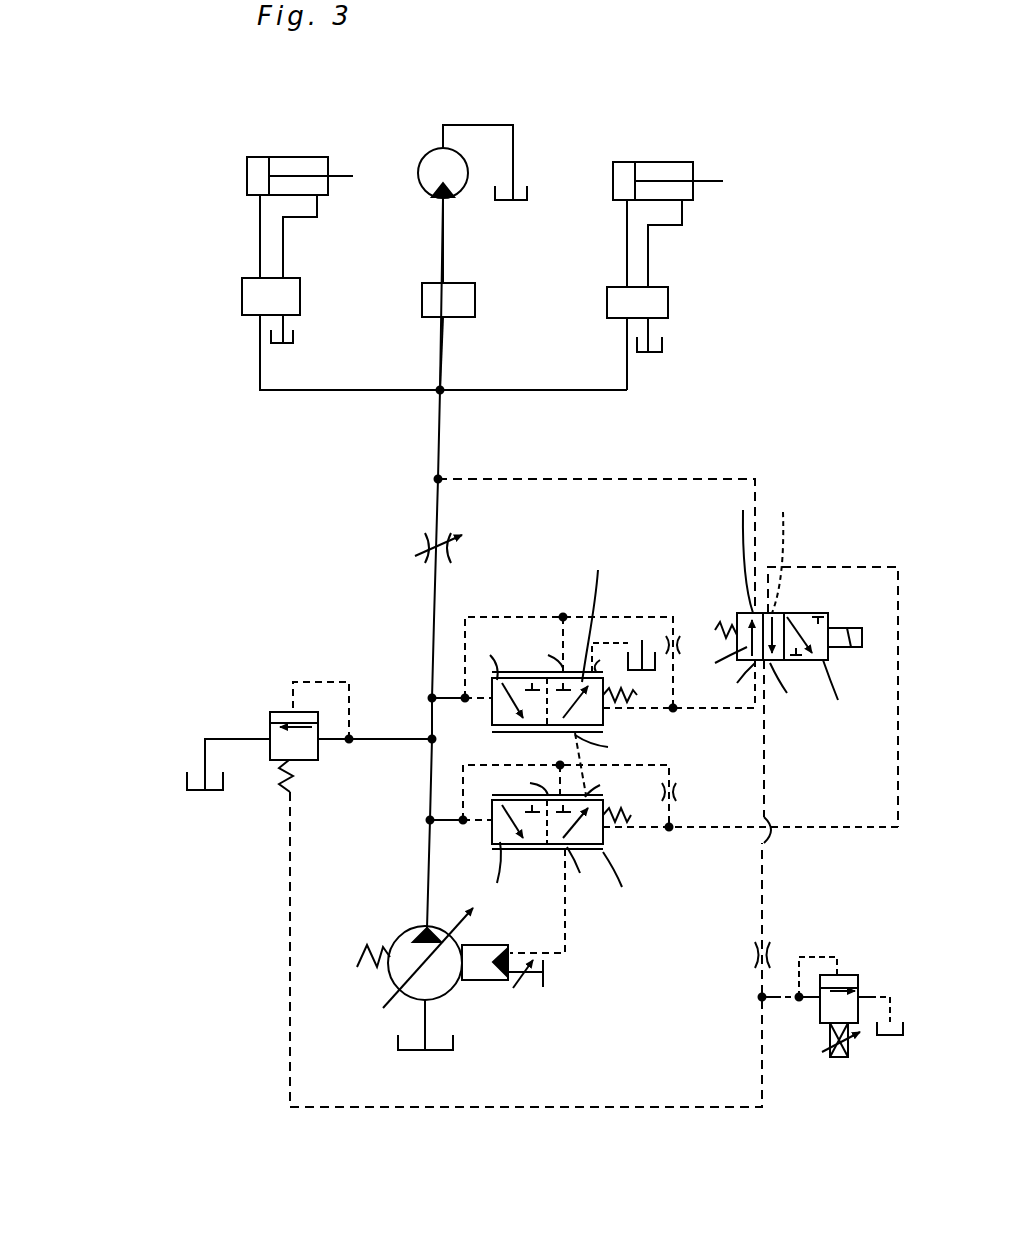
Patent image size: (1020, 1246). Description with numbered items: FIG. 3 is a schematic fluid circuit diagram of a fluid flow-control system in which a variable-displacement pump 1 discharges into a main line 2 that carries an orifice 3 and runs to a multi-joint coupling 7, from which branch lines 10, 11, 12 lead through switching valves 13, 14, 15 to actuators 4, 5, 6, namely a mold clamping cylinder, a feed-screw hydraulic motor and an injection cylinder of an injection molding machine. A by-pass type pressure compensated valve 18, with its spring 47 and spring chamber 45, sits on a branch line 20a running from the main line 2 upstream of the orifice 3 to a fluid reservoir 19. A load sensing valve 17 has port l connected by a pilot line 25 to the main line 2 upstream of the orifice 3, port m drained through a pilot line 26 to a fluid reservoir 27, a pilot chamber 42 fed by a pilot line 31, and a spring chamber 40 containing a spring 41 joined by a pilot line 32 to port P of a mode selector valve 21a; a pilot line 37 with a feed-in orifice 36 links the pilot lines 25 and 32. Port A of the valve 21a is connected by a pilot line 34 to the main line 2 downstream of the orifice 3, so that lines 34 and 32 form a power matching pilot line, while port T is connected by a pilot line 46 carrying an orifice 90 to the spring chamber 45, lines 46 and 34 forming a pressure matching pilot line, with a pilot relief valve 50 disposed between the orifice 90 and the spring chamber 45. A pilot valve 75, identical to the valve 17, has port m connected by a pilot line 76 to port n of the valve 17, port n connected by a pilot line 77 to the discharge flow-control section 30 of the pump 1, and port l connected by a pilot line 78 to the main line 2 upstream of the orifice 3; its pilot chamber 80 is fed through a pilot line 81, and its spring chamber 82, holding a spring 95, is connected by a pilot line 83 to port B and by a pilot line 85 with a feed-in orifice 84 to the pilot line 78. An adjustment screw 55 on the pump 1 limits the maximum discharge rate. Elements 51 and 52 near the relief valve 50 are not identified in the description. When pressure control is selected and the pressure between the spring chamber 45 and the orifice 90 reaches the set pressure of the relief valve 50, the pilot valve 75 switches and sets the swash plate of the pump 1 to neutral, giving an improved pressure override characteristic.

The variable-displacement pump 1 is at (403, 930).
The main line 2 is at (433, 620).
The orifice 3 is at (420, 545).
The actuator 4 is at (287, 152).
The actuator 5 is at (430, 150).
The actuator 6 is at (652, 160).
The multi-joint coupling 7 is at (442, 393).
The branch line 10 is at (257, 355).
The branch line 11 is at (437, 352).
The branch line 12 is at (625, 353).
The switching valve 13 is at (248, 295).
The switching valve 14 is at (428, 298).
The switching valve 15 is at (613, 300).
The load sensing valve 17 is at (517, 663).
The by-pass type pressure compensated valve 18 is at (270, 700).
The fluid reservoir 19 is at (188, 777).
The branch line 20a is at (375, 741).
The mode selector valve 21a is at (803, 607).
The pilot line 25 is at (475, 613).
The pilot line 26 is at (642, 640).
The fluid reservoir 27 is at (655, 655).
The discharge flow-control section 30 is at (480, 973).
The pilot line 31 is at (433, 698).
The pilot line 32 is at (733, 713).
The pilot line 34 is at (602, 478).
The feed-in orifice 36 is at (685, 645).
The pilot line 37 is at (625, 617).
The spring chamber 40 is at (607, 710).
The spring 41 is at (638, 690).
The pilot chamber 42 is at (488, 700).
The spring chamber 45 is at (292, 762).
The pilot line 46 is at (768, 893).
The spring 47 is at (282, 783).
The pilot relief valve 50 is at (857, 967).
The line 51 is at (767, 1002).
The tank 52 is at (893, 1037).
The adjustment screw 55 is at (537, 963).
The pilot valve 75 is at (532, 855).
The pilot line 76 is at (575, 733).
The pilot line 77 is at (567, 930).
The pilot line 78 is at (463, 778).
The pilot chamber 80 is at (488, 823).
The pilot line 81 is at (463, 822).
The spring chamber 82 is at (603, 830).
The pilot line 83 is at (707, 833).
The feed-in orifice 84 is at (677, 790).
The pilot line 85 is at (660, 763).
The orifice 90 is at (748, 955).
The spring 95 is at (631, 815).